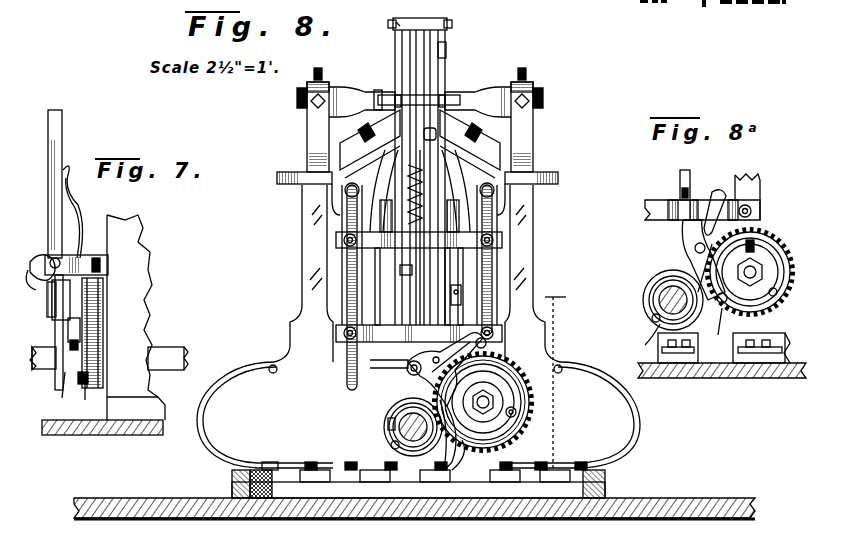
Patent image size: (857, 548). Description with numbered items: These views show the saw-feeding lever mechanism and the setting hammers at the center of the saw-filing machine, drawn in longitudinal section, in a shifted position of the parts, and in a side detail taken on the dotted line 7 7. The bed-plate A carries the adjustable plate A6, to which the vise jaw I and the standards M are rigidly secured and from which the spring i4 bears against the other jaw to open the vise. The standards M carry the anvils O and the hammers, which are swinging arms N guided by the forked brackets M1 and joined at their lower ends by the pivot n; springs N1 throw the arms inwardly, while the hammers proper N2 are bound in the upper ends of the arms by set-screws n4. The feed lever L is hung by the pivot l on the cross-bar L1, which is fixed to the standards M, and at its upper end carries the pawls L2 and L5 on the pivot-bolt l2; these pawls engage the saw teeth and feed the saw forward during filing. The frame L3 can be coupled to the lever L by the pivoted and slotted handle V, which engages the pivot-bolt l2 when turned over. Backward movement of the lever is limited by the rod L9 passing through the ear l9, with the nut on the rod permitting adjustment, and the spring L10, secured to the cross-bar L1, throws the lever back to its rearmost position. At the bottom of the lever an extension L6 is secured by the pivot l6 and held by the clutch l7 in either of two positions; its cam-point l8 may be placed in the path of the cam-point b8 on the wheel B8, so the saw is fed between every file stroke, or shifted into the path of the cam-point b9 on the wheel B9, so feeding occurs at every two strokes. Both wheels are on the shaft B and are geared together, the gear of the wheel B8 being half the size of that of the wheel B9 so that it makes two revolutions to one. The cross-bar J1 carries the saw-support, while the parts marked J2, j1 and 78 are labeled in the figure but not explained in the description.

In FIG. 8, the bed-plate A is at (114, 508).
In FIG. 7, the adjustable plate A6 is at (102, 443).
In FIG. 8, the adjustable plate A6 is at (512, 500).
In FIG. 8A, the adjustable plate A6 is at (740, 378).
In FIG. 7, the shaft B is at (170, 356).
In FIG. 8, the shaft B is at (413, 427).
In FIG. 8A, the shaft B is at (658, 298).
In FIG. 7, the wheel B8 is at (88, 395).
In FIG. 8, the wheel B8 is at (388, 421).
In FIG. 8A, the wheel B8 is at (650, 316).
In FIG. 7, the wheel B9 is at (98, 325).
In FIG. 8, the wheel B9 is at (535, 398).
In FIG. 8A, the wheel B9 is at (772, 305).
In FIG. 8, the cam-point b8 is at (391, 446).
In FIG. 8A, the cam-point b8 is at (642, 339).
In FIG. 8, the cam-point b9 is at (532, 415).
In FIG. 8A, the cam-point b9 is at (779, 290).
In FIG. 8, the jaw I is at (382, 287).
In FIG. 8, the spring i4 is at (455, 465).
In FIG. 8, the cross-bar J1 is at (404, 248).
In FIG. 8, the bolt j1 is at (498, 240).
In FIG. 8, the bracket J2 is at (348, 240).
In FIG. 7, the lever L is at (50, 207).
In FIG. 8, the lever L is at (430, 95).
In FIG. 8A, the lever L is at (680, 178).
In FIG. 7, the cross-bar L1 is at (88, 262).
In FIG. 8, the cross-bar L1 is at (419, 333).
In FIG. 8A, the cross-bar L1 is at (645, 212).
In FIG. 8, the pawl L2 is at (420, 20).
In FIG. 8, the frame L3 is at (410, 66).
In FIG. 8, the pawl L5 is at (446, 50).
In FIG. 7, the extension L6 is at (58, 330).
In FIG. 8, the extension L6 is at (440, 388).
In FIG. 8A, the extension L6 is at (710, 275).
In FIG. 8, the bolt or rod L9 is at (430, 160).
In FIG. 7, the spring L10 is at (80, 200).
In FIG. 7, the pivot l is at (45, 256).
In FIG. 8A, the pivot l is at (668, 200).
In FIG. 8, the pivot-bolt l2 is at (400, 298).
In FIG. 7, the pivot l6 is at (72, 318).
In FIG. 8A, the pivot l6 is at (694, 248).
In FIG. 7, the clutch l7 is at (48, 302).
In FIG. 8, the clutch l7 is at (490, 346).
In FIG. 8A, the clutch l7 is at (700, 236).
In FIG. 7, the cam-point l8 is at (58, 392).
In FIG. 8A, the cam-point l8 is at (716, 328).
In FIG. 8, the ear l9 is at (436, 136).
In FIG. 7, the standards M is at (138, 257).
In FIG. 8, the standards M is at (492, 270).
In FIG. 8A, the standards M is at (752, 182).
In FIG. 8, the forked brackets M1 is at (290, 176).
In FIG. 8, the hammers N is at (308, 242).
In FIG. 8, the springs N1 is at (640, 425).
In FIG. 8, the hammers proper N2 is at (343, 86).
In FIG. 8, the pivot n is at (414, 374).
In FIG. 8, the set-screws n4 is at (317, 68).
In FIG. 8, the anvils O is at (380, 128).
In FIG. 8, the handle V is at (400, 24).
In FIG. 8, the section line 7 is at (555, 370).
In FIG. 8, the link 78 is at (463, 470).